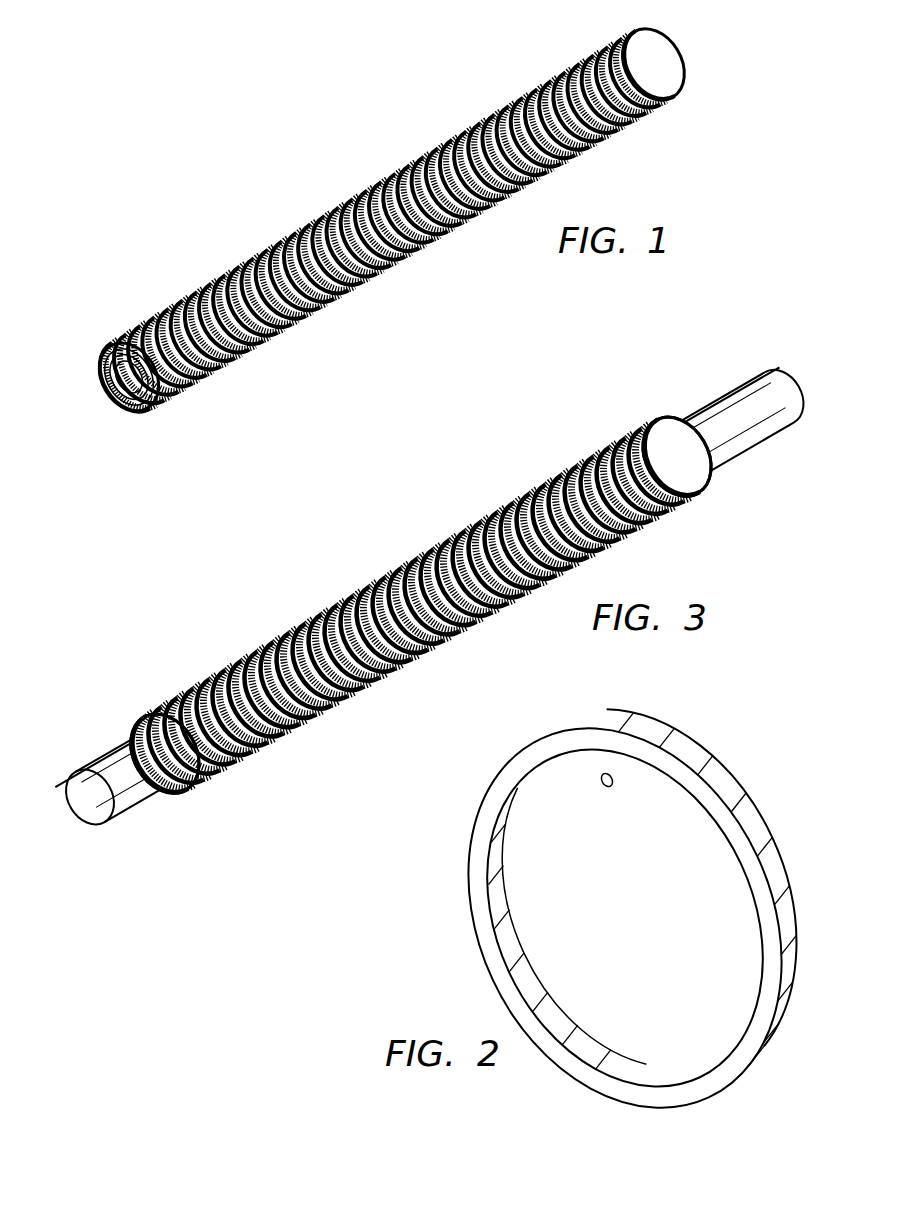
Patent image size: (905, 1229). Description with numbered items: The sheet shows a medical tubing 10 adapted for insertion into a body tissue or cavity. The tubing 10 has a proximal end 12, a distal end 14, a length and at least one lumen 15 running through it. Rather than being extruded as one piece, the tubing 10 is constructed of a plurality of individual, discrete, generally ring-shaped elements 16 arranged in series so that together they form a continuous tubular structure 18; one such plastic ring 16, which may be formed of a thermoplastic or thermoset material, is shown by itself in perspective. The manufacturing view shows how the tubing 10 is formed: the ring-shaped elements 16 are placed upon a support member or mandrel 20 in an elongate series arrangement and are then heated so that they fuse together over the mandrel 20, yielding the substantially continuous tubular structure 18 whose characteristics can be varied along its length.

In FIG. 1, the medical tubing 10 is at (340, 150).
In FIG. 3, the medical tubing 10 is at (452, 645).
In FIG. 1, the proximal end 12 is at (661, 102).
In FIG. 3, the proximal end 12 is at (648, 414).
In FIG. 1, the distal end 14 is at (165, 408).
In FIG. 3, the distal end 14 is at (152, 712).
In FIG. 1, the lumen 15 is at (118, 378).
In FIG. 1, the ring-shaped elements 16 is at (447, 231).
In FIG. 3, the ring-shaped elements 16 is at (415, 560).
In FIG. 1, the continuous tubular structure 18 is at (232, 352).
In FIG. 3, the continuous tubular structure 18 is at (312, 712).
In FIG. 2, the continuous tubular structure 18 is at (740, 806).
In FIG. 3, the mandrel 20 is at (742, 435).